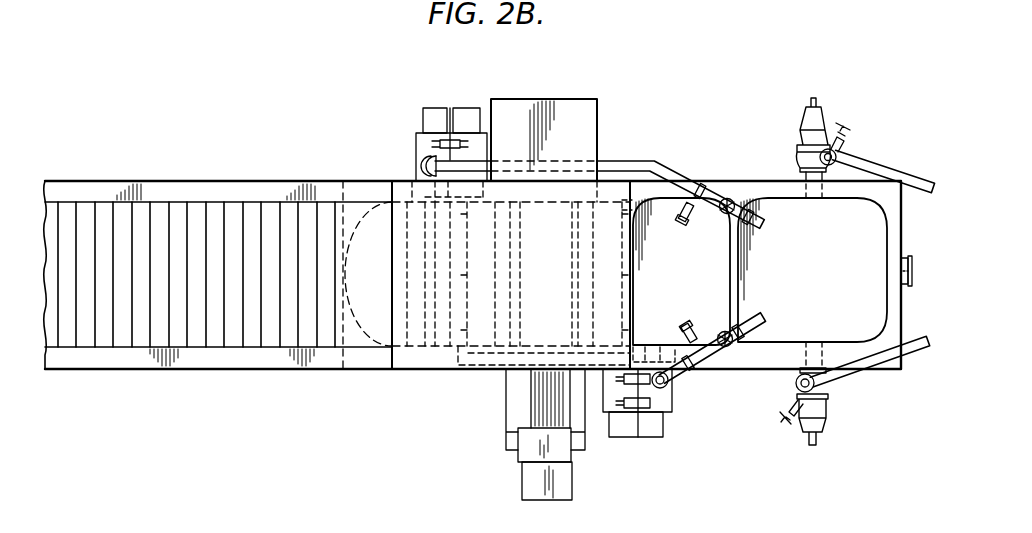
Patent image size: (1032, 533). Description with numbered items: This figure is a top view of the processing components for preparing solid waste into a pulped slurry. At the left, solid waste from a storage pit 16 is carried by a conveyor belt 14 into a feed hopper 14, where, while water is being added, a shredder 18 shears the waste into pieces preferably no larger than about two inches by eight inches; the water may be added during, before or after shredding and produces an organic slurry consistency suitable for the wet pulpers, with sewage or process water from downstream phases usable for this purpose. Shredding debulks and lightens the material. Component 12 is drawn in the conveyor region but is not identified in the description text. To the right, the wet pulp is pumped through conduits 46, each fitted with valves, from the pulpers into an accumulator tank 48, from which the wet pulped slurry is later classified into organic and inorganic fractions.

The conveyor 12 is at (252, 330).
The conveyor belt 14 is at (503, 338).
The storage pit 16 is at (25, 357).
The shredder 18 is at (557, 327).
The conduits 46 is at (680, 175).
The accumulator tank 48 is at (845, 325).